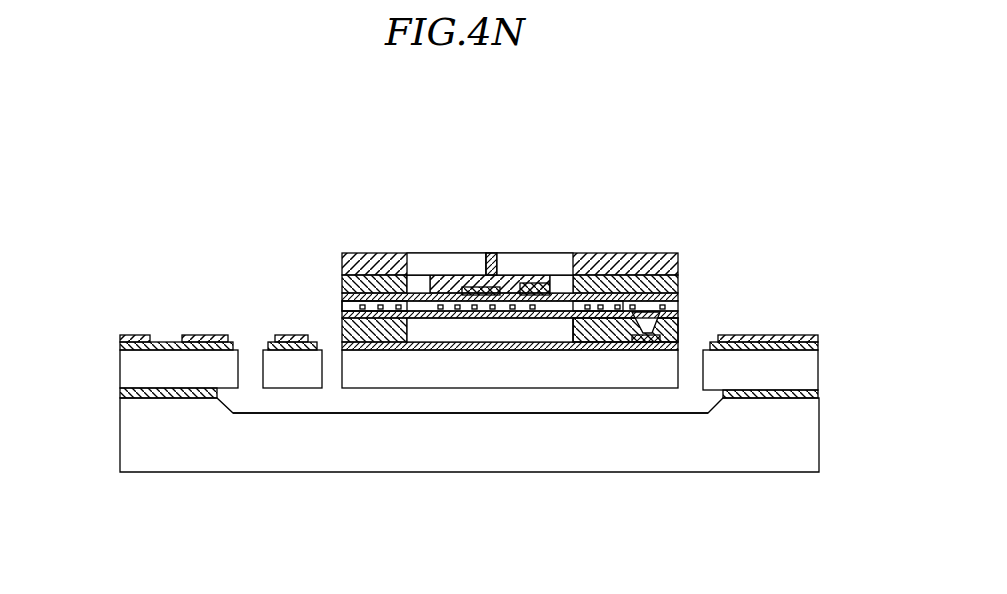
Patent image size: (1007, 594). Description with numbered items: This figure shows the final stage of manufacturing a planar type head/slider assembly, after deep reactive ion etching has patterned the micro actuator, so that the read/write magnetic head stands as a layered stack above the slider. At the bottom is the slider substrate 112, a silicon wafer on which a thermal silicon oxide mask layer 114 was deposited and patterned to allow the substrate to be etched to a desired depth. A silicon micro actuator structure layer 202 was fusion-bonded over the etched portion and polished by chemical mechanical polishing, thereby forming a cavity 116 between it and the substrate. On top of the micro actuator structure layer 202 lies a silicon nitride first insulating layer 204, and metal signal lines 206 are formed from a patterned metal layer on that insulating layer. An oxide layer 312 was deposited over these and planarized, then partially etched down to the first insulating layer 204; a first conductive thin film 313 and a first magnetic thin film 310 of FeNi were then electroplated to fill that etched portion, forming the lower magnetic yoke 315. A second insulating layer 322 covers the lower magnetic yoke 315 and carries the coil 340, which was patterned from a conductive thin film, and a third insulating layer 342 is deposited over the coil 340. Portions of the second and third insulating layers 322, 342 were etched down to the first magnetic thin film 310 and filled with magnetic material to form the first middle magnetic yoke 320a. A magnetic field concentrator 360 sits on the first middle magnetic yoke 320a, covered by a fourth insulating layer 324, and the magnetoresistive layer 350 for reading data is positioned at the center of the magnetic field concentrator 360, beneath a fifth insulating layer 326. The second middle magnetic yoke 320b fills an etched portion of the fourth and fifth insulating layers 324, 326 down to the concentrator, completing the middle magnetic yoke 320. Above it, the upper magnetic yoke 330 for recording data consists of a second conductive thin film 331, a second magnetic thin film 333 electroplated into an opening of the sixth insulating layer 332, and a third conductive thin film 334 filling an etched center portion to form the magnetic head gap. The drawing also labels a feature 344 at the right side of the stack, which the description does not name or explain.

The slider substrate 112 is at (818, 448).
The mask layer 114 is at (120, 392).
The cavity 116 is at (578, 410).
The micro actuator structure layer 202 is at (818, 380).
The first insulating layer 204 is at (818, 350).
The metal signal lines 206 is at (120, 340).
The first magnetic thin film 310 is at (425, 340).
The oxide layer 312 is at (679, 333).
The first conductive thin film 313 is at (470, 340).
The lower magnetic yoke 315 is at (510, 454).
The middle magnetic yoke 320 is at (456, 259).
The first middle magnetic yoke 320a is at (405, 307).
The second middle magnetic yoke 320b is at (408, 288).
The second insulating layer 322 is at (345, 313).
The fourth insulating layer 324 is at (345, 295).
The fifth insulating layer 326 is at (679, 283).
The upper magnetic yoke 330 is at (550, 186).
The second conductive thin film 331 is at (438, 252).
The sixth insulating layer 332 is at (679, 255).
The second magnetic thin film 333 is at (458, 252).
The third conductive thin film 334 is at (490, 252).
The coil 340 is at (617, 310).
The third insulating layer 342 is at (679, 307).
The via 344 is at (650, 318).
The magnetoresistive (MR) layer 350 is at (512, 290).
The magnetic field concentrator 360 is at (567, 275).